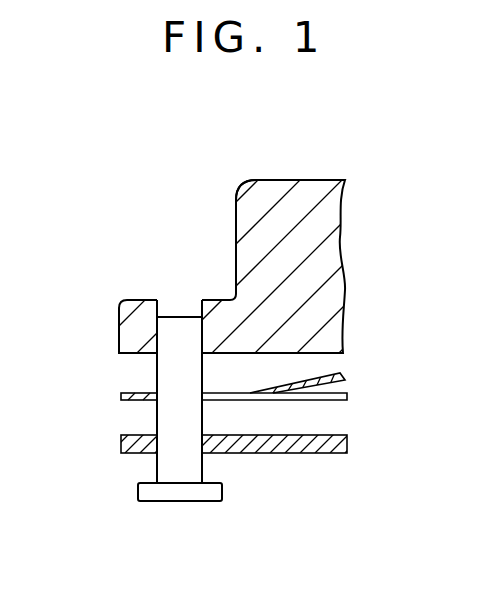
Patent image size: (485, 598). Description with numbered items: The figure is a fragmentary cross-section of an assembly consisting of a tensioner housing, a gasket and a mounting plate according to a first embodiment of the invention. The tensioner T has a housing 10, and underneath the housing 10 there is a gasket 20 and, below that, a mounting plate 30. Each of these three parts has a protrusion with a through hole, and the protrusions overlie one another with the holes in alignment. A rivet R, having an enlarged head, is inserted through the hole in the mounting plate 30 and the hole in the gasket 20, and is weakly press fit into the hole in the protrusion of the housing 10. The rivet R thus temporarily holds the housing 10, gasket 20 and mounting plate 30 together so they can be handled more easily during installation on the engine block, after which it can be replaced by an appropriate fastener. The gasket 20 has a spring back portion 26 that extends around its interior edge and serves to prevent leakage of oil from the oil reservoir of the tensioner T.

The housing 10 is at (238, 228).
The tensioner T is at (252, 183).
The gasket 20 is at (122, 396).
The spring back portion 26 is at (344, 376).
The mounting plate 30 is at (122, 443).
The rivet R is at (226, 492).